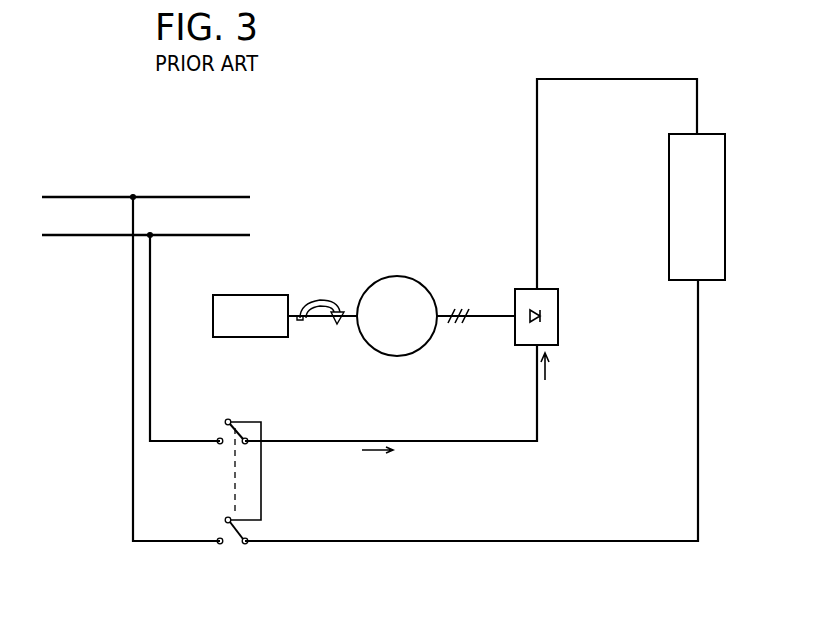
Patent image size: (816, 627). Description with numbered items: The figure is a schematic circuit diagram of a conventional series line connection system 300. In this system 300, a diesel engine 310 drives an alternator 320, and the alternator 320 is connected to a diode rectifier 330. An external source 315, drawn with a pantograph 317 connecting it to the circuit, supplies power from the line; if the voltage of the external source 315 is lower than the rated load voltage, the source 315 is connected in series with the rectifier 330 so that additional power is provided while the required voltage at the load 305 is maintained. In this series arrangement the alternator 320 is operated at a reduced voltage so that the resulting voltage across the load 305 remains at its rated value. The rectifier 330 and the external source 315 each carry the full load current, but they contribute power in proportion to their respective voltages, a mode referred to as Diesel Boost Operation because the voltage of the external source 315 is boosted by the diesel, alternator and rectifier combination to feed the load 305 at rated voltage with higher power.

The series line connection system 300 is at (93, 124).
The load 305 is at (700, 133).
The diesel engine 310 is at (250, 295).
The external source 315 is at (113, 162).
The pantograph 317 is at (62, 273).
The alternator 320 is at (415, 283).
The diode rectifier 330 is at (558, 300).